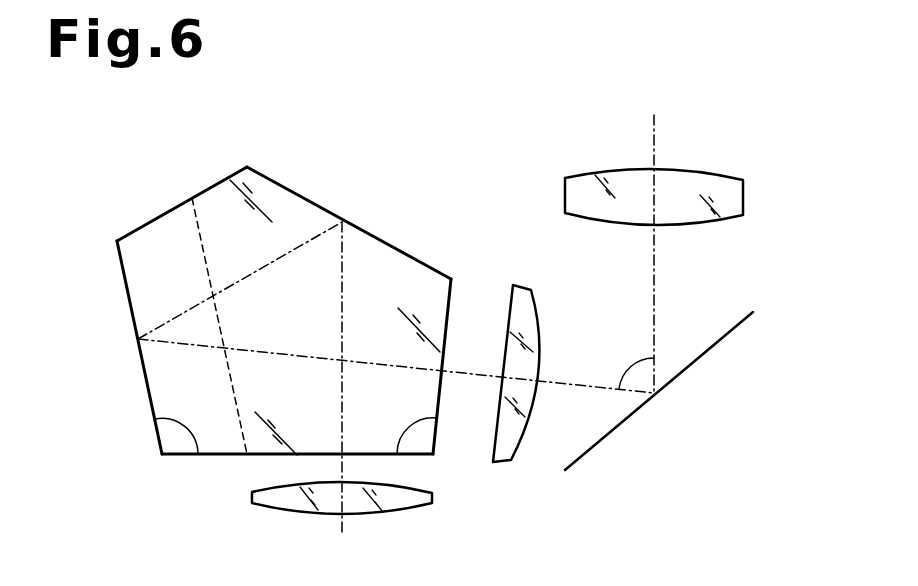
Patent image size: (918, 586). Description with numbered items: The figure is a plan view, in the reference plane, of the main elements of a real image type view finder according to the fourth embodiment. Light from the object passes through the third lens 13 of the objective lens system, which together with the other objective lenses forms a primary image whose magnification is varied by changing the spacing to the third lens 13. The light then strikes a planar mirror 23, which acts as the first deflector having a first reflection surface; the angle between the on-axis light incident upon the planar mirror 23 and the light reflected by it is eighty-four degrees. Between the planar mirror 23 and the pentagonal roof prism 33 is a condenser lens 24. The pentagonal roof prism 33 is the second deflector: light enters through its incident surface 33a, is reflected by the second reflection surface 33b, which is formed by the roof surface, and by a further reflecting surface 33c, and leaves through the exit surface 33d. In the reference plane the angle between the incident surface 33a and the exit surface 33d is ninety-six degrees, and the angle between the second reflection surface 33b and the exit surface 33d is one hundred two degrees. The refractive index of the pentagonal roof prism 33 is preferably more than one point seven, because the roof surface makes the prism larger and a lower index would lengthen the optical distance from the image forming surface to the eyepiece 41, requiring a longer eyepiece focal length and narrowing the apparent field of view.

The third lens 13 is at (686, 177).
The planar mirror 23 is at (680, 373).
The condenser lens 24 is at (531, 322).
The pentagonal roof prism 33 is at (281, 178).
The incident surface 33a is at (449, 302).
The second reflection surface 33b is at (141, 360).
The prism reflecting surface 33c is at (389, 245).
The exit surface 33d is at (381, 455).
The eyepiece 41 is at (292, 503).